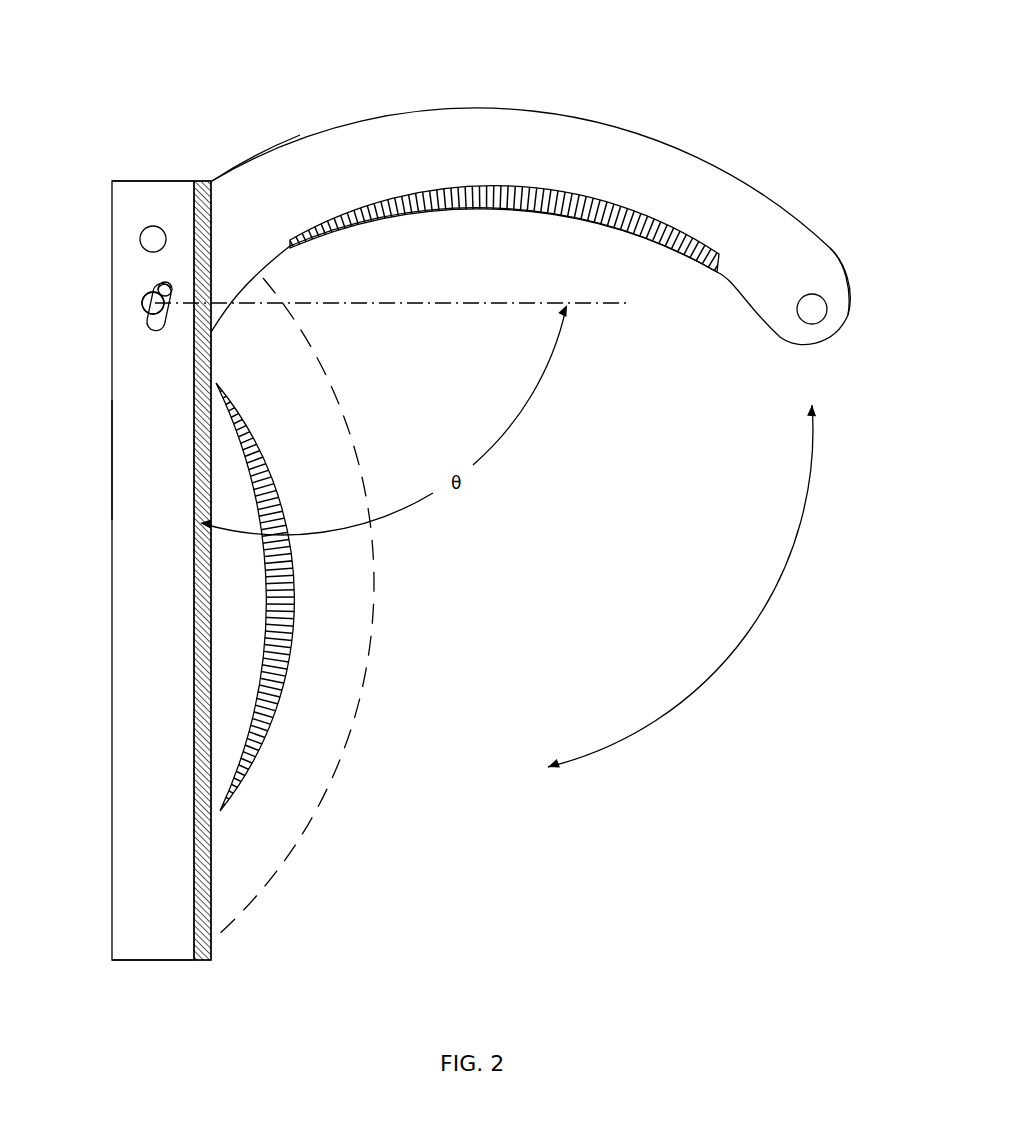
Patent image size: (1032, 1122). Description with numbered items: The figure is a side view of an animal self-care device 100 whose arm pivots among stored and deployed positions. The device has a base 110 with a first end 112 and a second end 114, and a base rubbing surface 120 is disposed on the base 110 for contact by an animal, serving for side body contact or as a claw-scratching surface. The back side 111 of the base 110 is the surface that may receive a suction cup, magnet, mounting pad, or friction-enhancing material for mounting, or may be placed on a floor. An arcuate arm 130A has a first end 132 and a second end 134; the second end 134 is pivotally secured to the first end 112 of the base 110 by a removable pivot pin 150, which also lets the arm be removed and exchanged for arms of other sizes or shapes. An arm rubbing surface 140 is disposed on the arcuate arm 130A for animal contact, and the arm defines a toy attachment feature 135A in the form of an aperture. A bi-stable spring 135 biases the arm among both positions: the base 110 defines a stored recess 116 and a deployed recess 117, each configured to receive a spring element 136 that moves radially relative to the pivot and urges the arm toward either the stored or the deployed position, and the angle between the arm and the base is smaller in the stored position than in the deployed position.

The animal self-care device 100 is at (160, 49).
The base 110 is at (132, 573).
The back side of the base 111 is at (100, 457).
The first end of the base 112 is at (90, 178).
The second end of the base 114 is at (90, 913).
The stored recess 116 is at (152, 328).
The deployed recess 117 is at (160, 292).
The base rubbing surface 120 is at (210, 943).
The arcuate arm 130A is at (530, 128).
The first end of the arm 132 is at (243, 136).
The second end of the arm 134 is at (829, 231).
The bi-stable spring 135 is at (118, 299).
The toy attachment feature 135A is at (826, 303).
The spring element 136 is at (158, 294).
The arm rubbing surface 140 is at (480, 212).
The removable pivot pin 150 is at (145, 307).